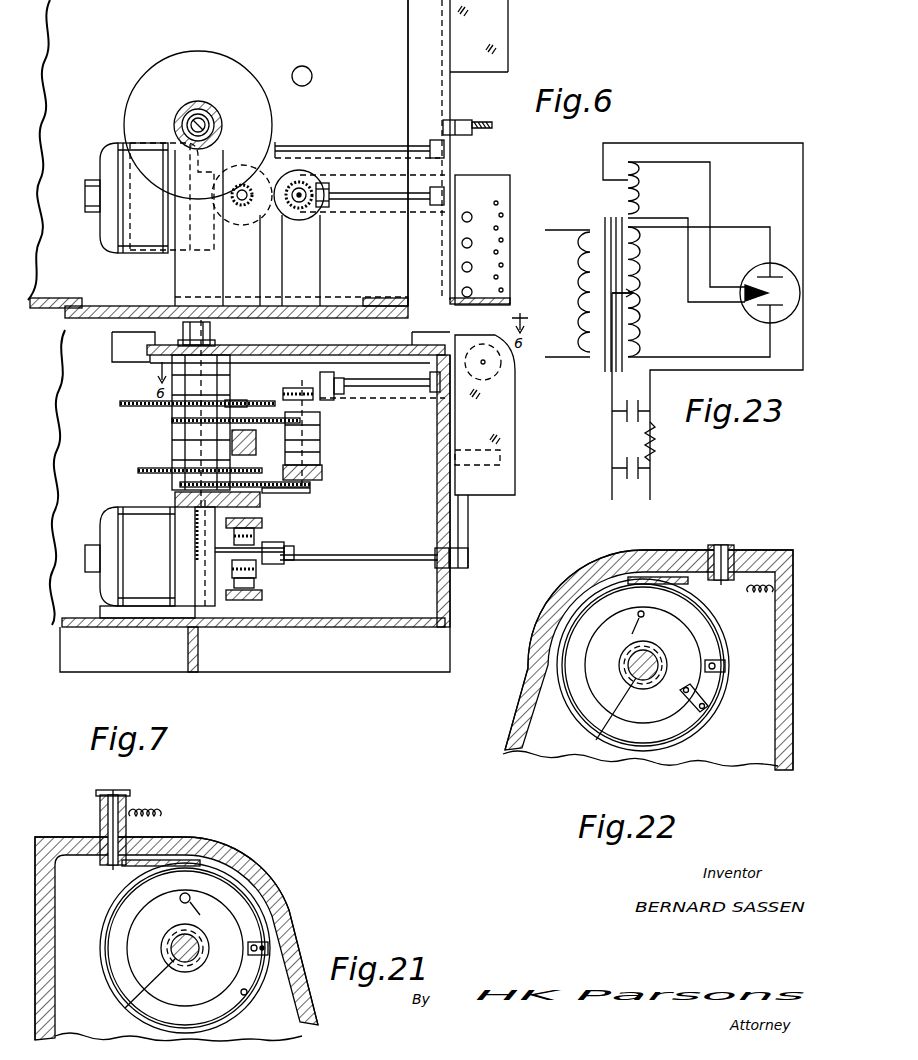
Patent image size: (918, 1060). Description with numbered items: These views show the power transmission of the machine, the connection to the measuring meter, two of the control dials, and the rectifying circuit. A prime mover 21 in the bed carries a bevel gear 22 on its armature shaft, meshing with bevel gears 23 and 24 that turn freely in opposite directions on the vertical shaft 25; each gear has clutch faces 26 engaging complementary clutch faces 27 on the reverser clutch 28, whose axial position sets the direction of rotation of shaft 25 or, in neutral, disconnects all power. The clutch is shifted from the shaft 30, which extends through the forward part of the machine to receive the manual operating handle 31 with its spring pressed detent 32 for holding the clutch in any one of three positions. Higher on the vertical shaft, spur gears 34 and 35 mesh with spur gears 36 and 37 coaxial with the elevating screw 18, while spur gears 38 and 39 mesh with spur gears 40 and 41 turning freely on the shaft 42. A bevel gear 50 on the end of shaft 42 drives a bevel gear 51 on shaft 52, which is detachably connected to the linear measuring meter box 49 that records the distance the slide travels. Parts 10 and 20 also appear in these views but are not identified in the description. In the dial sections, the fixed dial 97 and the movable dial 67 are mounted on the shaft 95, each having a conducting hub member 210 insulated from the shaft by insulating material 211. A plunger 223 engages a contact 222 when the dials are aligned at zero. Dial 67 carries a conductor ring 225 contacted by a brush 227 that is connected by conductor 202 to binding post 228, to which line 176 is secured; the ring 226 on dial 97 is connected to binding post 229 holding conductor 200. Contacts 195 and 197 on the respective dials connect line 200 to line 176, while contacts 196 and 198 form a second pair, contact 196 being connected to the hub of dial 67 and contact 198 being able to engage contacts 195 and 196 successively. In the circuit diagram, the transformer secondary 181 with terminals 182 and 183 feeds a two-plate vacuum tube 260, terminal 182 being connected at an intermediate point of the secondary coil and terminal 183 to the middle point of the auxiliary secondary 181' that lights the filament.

In FIG. 6, the frame wall 10 is at (450, 104).
In FIG. 7, the frame wall 10 is at (452, 585).
In FIG. 6, the elevating screw 18 is at (214, 111).
In FIG. 7, the elevating screw 18 is at (178, 333).
In FIG. 7, the pedestal bearing 20 is at (172, 445).
In FIG. 6, the prime mover 21 is at (130, 252).
In FIG. 7, the prime mover 21 is at (112, 520).
In FIG. 7, the bevel gear 22 is at (200, 640).
In FIG. 7, the bevel gear 23 is at (262, 596).
In FIG. 7, the bevel gear 24 is at (262, 523).
In FIG. 7, the vertical shaft 25 is at (262, 550).
In FIG. 7, the clutch faces 26 is at (254, 536).
In FIG. 7, the complementary clutch faces 27 is at (256, 569).
In FIG. 7, the reverser clutch 28 is at (284, 546).
In FIG. 6, the shaft 30 is at (357, 147).
In FIG. 7, the shaft 30 is at (402, 556).
In FIG. 7, the manual operating handle 31 is at (468, 530).
In FIG. 6, the spring pressed detent 32 is at (478, 134).
In FIG. 7, the spring pressed detent 32 is at (500, 462).
In FIG. 6, the spur gear 34 is at (238, 206).
In FIG. 7, the spur gear 34 is at (230, 400).
In FIG. 7, the spur gear 35 is at (262, 482).
In FIG. 6, the spur gear 36 is at (270, 113).
In FIG. 7, the spur gear 36 is at (120, 404).
In FIG. 7, the spur gear 37 is at (138, 471).
In FIG. 6, the spur gear 38 is at (236, 232).
In FIG. 7, the spur gear 38 is at (258, 432).
In FIG. 7, the spur gear 39 is at (275, 492).
In FIG. 7, the spur gear 40 is at (300, 420).
In FIG. 7, the spur gear 41 is at (312, 487).
In FIG. 7, the shaft 42 is at (305, 440).
In FIG. 6, the linear measuring meter box 49 is at (510, 190).
In FIG. 7, the linear measuring meter box 49 is at (505, 410).
In FIG. 22, the linear measuring meter box 49 is at (518, 703).
In FIG. 21, the linear measuring meter box 49 is at (268, 880).
In FIG. 6, the bevel gear 50 is at (310, 215).
In FIG. 7, the bevel gear 50 is at (290, 380).
In FIG. 6, the bevel gear 51 is at (322, 183).
In FIG. 7, the bevel gear 51 is at (325, 372).
In FIG. 6, the shaft 52 is at (355, 190).
In FIG. 7, the shaft 52 is at (415, 378).
In FIG. 22, the movable dial 67 is at (730, 643).
In FIG. 22, the shaft 95 is at (632, 683).
In FIG. 21, the shaft 95 is at (202, 948).
In FIG. 21, the fixed dial 97 is at (110, 896).
In FIG. 23, the line 176 is at (578, 296).
In FIG. 23, the secondary 181 is at (658, 292).
In FIG. 23, the auxiliary secondary 181' is at (661, 188).
In FIG. 23, the terminal 182 is at (650, 286).
In FIG. 23, the terminal 183 is at (626, 184).
In FIG. 22, the contact 195 is at (726, 666).
In FIG. 22, the contact 196 is at (710, 712).
In FIG. 21, the contact 197 is at (258, 958).
In FIG. 21, the contact 198 is at (248, 996).
In FIG. 21, the conductor 200 is at (166, 814).
In FIG. 22, the conductor 202 is at (758, 580).
In FIG. 22, the hub member 210 is at (601, 711).
In FIG. 21, the hub member 210 is at (121, 985).
In FIG. 22, the insulating material 211 is at (599, 741).
In FIG. 21, the insulating material 211 is at (125, 1008).
In FIG. 21, the contact 222 is at (204, 908).
In FIG. 22, the plunger 223 is at (620, 627).
In FIG. 22, the conductor ring 225 is at (713, 620).
In FIG. 21, the conductor ring 226 is at (105, 921).
In FIG. 22, the brush 227 is at (642, 578).
In FIG. 21, the binding post 228 is at (190, 858).
In FIG. 21, the binding post 229 is at (126, 808).
In FIG. 23, the two-plate vacuum tube 260 is at (754, 322).